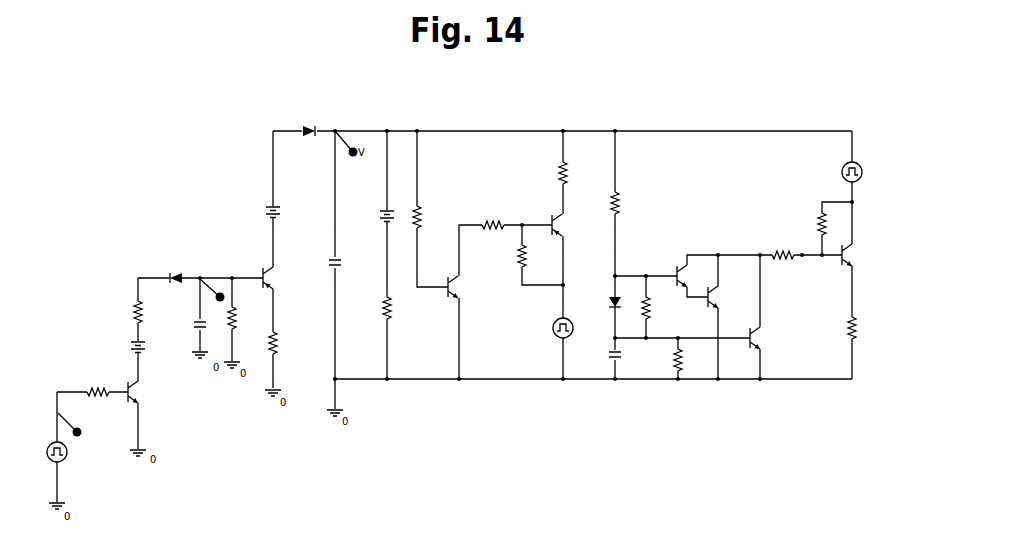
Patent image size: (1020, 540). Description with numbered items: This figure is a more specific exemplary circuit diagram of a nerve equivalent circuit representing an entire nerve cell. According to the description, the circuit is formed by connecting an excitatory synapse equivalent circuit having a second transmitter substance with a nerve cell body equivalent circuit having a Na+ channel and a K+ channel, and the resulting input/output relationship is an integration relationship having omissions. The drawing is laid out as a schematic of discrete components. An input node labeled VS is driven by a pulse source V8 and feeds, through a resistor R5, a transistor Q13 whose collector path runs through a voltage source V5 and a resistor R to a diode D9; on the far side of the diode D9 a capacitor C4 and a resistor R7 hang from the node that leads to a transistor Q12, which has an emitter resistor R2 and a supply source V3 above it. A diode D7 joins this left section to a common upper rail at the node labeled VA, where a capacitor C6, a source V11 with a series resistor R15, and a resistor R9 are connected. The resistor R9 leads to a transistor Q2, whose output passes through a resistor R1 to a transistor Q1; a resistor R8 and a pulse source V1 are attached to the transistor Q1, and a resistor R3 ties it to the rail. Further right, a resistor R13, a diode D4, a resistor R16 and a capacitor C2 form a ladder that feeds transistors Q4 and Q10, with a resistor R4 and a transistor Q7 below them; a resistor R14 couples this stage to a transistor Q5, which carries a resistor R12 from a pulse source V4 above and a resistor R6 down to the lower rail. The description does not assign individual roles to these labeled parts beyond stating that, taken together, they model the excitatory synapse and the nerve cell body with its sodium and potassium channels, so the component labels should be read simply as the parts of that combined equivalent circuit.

The input signal voltage node Vs VS is at (63, 390).
The voltage node VA is at (390, 128).
The diode D7 (DDEF) D7 is at (307, 115).
The DC voltage source V3 10Vdc V3 is at (290, 212).
The PNP transistor Q12 (QPDEF) Q12 is at (290, 279).
The resistor R2 1k R2 is at (288, 344).
The diode D9 is at (170, 268).
The resistor R (RDEF) 1k R is at (157, 313).
The DC voltage source V5 10Vdc V5 is at (134, 346).
The NPN transistor Q13 (QNDEF) Q13 is at (155, 397).
The resistor R5 100 R5 is at (98, 390).
The pulse voltage source V8 is at (91, 480).
The capacitor C4 100u C4 is at (212, 330).
The resistor R7 10k R7 is at (243, 324).
The capacitor C6 10u C6 is at (350, 272).
The DC voltage source V11 1Vdc V11 is at (375, 209).
The resistor R15 10k R15 is at (405, 311).
The resistor R9 100 R9 is at (431, 217).
The NPN transistor Q2 (QNDEF) Q2 is at (471, 292).
The resistor R1 10k R1 is at (495, 227).
The resistor R8 10k R8 is at (534, 257).
The PNP transistor Q1 (QPDEF) Q1 is at (575, 225).
The resistor R3 10 R3 is at (578, 176).
The pulse voltage source V1 is at (541, 339).
The resistor R13 50k R13 is at (632, 207).
The diode D4 is at (607, 297).
The resistor R16 5k R16 is at (658, 308).
The capacitor C2 0.5u C2 is at (631, 363).
The resistor R4 30k R4 is at (693, 363).
The NPN transistor Q4 (QNDEF) Q4 is at (672, 261).
The NPN transistor Q10 (QNDEF) Q10 is at (731, 292).
The NPN transistor Q7 (QNDEF) Q7 is at (778, 338).
The resistor R14 1k R14 is at (786, 269).
The resistor R12 10k R12 is at (809, 225).
The NPN transistor Q5 is at (856, 255).
The resistor R6 10 R6 is at (862, 323).
The pulse voltage source V4 is at (826, 137).